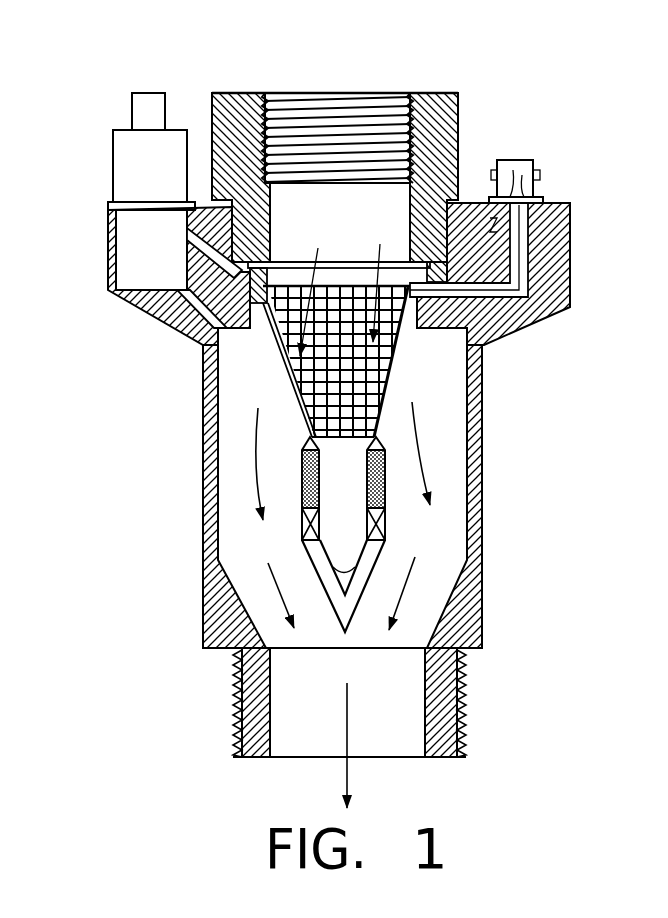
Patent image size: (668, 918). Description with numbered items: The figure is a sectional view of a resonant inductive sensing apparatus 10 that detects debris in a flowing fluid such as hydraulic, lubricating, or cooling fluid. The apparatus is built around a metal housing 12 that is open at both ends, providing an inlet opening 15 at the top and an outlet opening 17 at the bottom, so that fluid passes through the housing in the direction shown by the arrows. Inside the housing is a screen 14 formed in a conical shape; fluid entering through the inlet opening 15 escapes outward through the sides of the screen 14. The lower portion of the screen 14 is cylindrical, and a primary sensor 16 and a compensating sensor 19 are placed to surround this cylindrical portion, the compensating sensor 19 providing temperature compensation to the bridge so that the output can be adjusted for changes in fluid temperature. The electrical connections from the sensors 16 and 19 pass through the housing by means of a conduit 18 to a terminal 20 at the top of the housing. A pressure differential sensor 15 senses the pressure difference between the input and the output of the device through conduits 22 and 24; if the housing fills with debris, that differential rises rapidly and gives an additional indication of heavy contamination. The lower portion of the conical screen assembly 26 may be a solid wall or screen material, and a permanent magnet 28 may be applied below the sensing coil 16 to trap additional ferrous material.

The resonant inductive sensing apparatus 10 is at (191, 537).
The metal housing 12 is at (462, 700).
The screen 14 is at (292, 367).
The inlet opening 15 is at (152, 163).
The primary sensor 16 is at (390, 455).
The outlet opening 17 is at (288, 748).
The conduit 18 is at (500, 312).
The compensating sensor 19 is at (388, 490).
The terminal 20 is at (513, 160).
The conduit 22 is at (275, 250).
The conduit 24 is at (200, 340).
The conical screen assembly 26 is at (380, 568).
The permanent magnet 28 is at (388, 520).